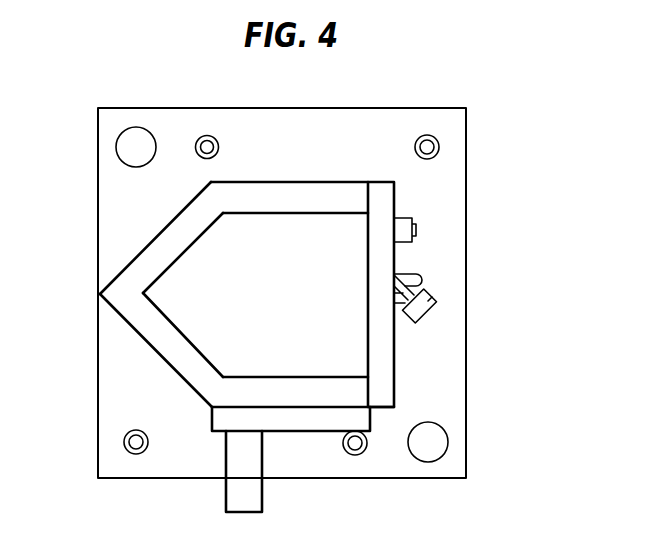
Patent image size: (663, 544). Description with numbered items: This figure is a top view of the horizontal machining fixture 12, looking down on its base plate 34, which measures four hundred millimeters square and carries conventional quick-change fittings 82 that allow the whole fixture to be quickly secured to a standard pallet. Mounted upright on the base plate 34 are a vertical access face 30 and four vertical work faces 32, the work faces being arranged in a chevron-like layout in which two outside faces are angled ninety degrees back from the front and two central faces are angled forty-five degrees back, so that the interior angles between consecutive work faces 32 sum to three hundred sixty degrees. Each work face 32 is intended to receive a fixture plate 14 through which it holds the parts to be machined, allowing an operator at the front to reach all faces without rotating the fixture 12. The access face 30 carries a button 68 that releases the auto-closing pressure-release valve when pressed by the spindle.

The fixture 12 is at (290, 294).
The fixture plate 14 is at (312, 423).
The access face 30 is at (388, 195).
The work faces 32 is at (338, 190).
The base plate 34 is at (450, 345).
The button 68 is at (417, 230).
The quick-change fittings 82 is at (428, 462).